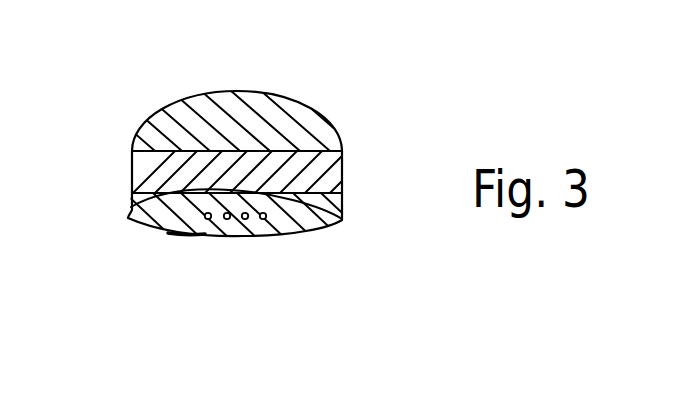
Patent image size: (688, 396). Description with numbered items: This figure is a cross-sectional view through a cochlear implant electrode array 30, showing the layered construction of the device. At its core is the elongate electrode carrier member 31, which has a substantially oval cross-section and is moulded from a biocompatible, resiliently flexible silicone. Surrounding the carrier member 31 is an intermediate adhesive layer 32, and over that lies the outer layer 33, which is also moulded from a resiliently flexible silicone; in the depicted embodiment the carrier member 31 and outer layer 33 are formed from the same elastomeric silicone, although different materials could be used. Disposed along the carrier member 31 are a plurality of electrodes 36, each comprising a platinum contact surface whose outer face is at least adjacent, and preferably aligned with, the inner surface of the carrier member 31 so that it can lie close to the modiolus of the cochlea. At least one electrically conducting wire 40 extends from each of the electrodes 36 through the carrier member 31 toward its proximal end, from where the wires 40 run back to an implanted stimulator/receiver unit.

The cochlear implant electrode array 30 is at (242, 149).
The elongate electrode carrier member 31 is at (135, 224).
The intermediate adhesive layer 32 is at (345, 177).
The outer layer 33 is at (172, 113).
The electrodes 36 is at (232, 240).
The electrically conducting wire 40 is at (302, 230).